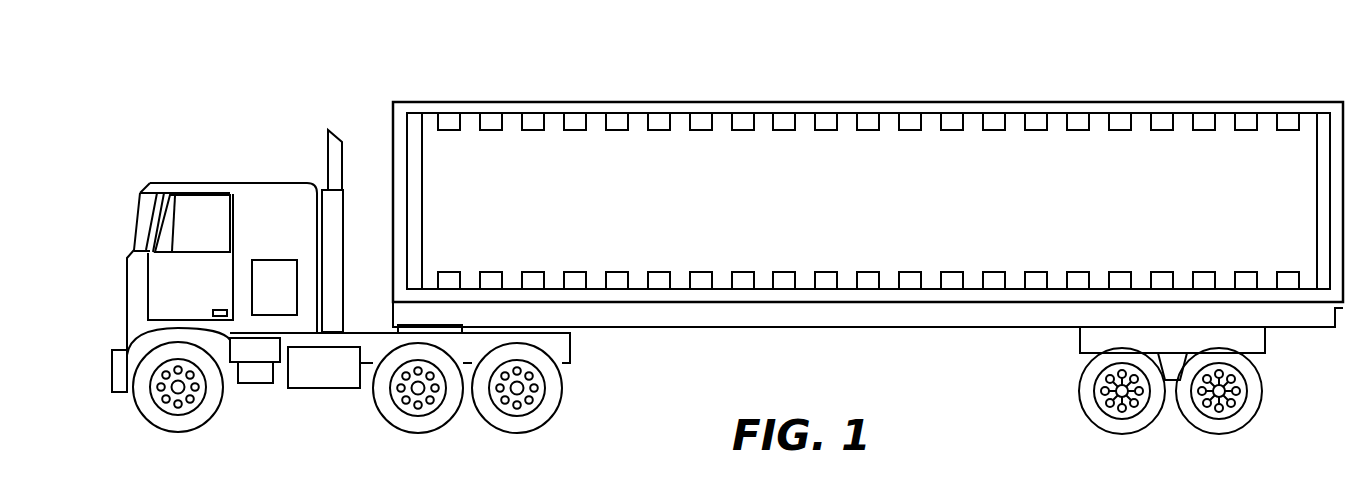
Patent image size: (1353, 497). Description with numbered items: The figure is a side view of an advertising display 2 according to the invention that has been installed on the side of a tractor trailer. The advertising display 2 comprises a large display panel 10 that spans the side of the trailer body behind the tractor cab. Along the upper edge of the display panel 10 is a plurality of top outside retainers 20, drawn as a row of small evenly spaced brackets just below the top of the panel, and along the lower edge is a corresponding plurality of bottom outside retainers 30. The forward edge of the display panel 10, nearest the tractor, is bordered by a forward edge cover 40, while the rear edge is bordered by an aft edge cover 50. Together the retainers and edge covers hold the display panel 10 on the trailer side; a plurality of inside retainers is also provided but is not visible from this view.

The advertising display 2 is at (518, 85).
The display panel 10 is at (1007, 167).
The top outside retainers 20 is at (700, 118).
The bottom outside retainers 30 is at (575, 289).
The forward edge cover 40 is at (418, 150).
The aft edge cover 50 is at (1323, 272).